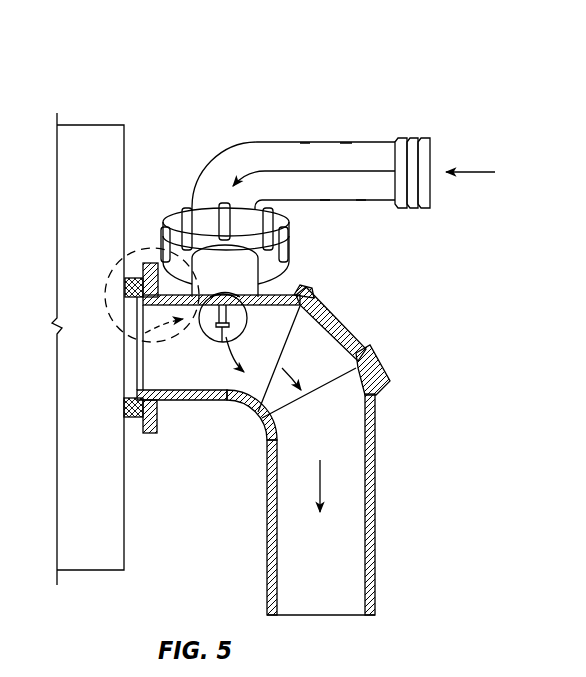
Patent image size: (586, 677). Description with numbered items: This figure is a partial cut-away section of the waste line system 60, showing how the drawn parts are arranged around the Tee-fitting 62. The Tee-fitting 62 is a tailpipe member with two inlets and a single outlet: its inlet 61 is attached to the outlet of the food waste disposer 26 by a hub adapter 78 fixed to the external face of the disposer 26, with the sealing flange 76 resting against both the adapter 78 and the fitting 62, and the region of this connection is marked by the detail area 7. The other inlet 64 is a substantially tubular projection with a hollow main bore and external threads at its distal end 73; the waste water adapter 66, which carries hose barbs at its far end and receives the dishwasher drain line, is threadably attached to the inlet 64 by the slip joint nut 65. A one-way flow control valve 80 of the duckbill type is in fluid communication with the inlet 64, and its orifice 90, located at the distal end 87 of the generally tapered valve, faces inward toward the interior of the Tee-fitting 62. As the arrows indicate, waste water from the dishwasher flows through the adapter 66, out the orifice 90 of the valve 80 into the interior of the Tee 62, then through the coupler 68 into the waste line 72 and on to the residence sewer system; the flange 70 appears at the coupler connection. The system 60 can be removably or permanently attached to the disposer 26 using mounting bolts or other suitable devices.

The waste line system 60 is at (213, 66).
The waste water adapter 66 is at (343, 142).
The distal end 73 is at (205, 242).
The slip joint nut 65 is at (290, 250).
The inlet 64 is at (258, 276).
The detail area 7 is at (107, 291).
The flange 70 is at (306, 295).
The coupler 68 is at (333, 329).
The one-way flow control valve 80 is at (243, 310).
The inlet 61 is at (140, 369).
The distal end 87 is at (217, 337).
The orifice 90 is at (231, 343).
The hub adapter 78 is at (126, 407).
The Tee-fitting 62 is at (180, 401).
The sealing flange 76 is at (141, 428).
The waste line 72 is at (375, 496).
The food waste disposer 26 is at (113, 508).